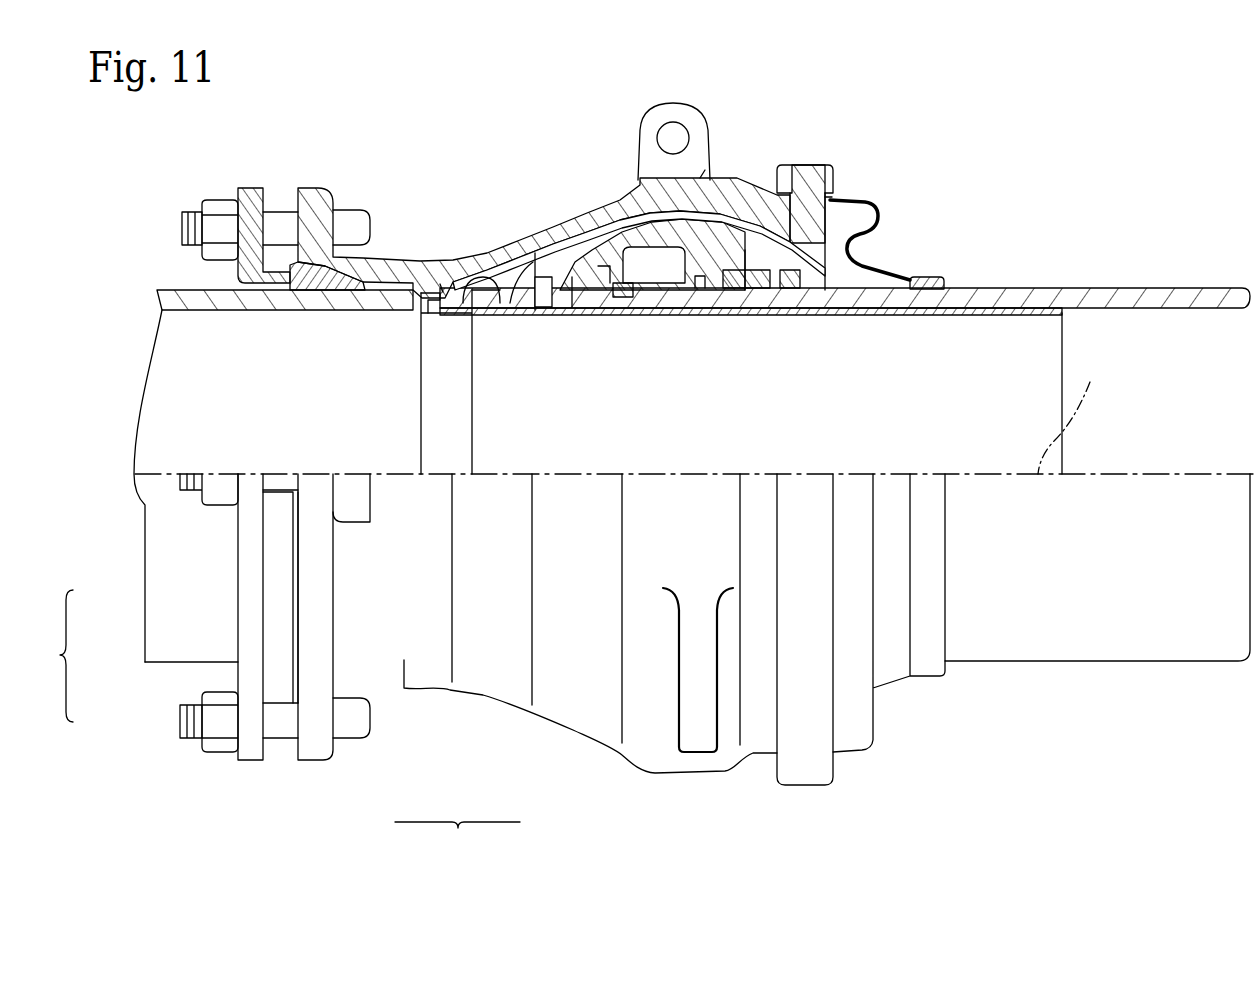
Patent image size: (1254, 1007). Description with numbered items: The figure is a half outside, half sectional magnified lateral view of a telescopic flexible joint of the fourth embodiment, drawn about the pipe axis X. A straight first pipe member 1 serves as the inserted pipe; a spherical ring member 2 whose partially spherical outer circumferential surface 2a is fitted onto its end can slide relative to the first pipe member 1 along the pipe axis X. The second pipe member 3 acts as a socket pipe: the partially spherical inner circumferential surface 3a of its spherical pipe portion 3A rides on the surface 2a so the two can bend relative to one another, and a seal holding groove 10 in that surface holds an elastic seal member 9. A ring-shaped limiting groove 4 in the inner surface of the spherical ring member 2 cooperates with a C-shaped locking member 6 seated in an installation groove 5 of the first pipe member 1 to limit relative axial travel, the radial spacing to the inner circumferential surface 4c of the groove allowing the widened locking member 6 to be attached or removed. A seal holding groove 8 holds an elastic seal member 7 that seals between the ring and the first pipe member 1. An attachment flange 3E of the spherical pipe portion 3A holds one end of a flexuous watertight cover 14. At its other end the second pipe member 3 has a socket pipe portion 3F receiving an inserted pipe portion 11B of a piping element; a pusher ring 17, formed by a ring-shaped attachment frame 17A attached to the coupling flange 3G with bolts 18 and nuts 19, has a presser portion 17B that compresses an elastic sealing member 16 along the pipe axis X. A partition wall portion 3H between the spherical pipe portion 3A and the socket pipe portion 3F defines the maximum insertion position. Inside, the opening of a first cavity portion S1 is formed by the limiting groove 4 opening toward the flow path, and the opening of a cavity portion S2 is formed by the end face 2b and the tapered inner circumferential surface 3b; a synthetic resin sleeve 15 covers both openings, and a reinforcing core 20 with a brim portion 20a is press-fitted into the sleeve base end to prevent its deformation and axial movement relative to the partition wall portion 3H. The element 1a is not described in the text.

The first pipe member 1 is at (1036, 288).
The step portion of shaft 1a is at (933, 313).
The spherical ring member 2 is at (743, 232).
The partially spherical outer circumferential surface 2a is at (580, 235).
The end face of the spherical ring member 2b is at (520, 297).
The second pipe member 3 is at (457, 849).
The spherical pipe portion 3A is at (713, 180).
The attachment flange 3E is at (797, 180).
The socket pipe portion 3F is at (406, 262).
The coupling flange 3G is at (312, 195).
The partition wall portion 3H is at (451, 275).
The partially spherical inner circumferential surface 3a is at (825, 197).
The tapered inner circumferential surface 3b is at (505, 262).
The limiting groove 4 is at (672, 292).
The inner circumferential surface of the limiting groove 4c is at (574, 300).
The installation groove 5 is at (625, 298).
The locking member 6 is at (600, 307).
The elastic seal member 7 is at (790, 320).
The seal holding groove 8 is at (740, 310).
The elastic seal member 9 is at (705, 168).
The seal holding groove 10 is at (638, 178).
The inserted pipe portion 11B is at (282, 312).
The cover 14 is at (862, 207).
The sleeve 15 is at (826, 315).
The elastic sealing member 16 is at (312, 312).
The pusher ring 17 is at (233, 274).
The ring-shaped attachment frame 17A is at (247, 196).
The presser portion 17B is at (255, 312).
The bolt 18 is at (360, 215).
The nut 19 is at (217, 202).
The reinforcing core 20 is at (442, 390).
The brim portion 20a is at (418, 316).
The first cavity portion S1 is at (562, 297).
The cavity portion S2 is at (497, 303).
The pipe axis X is at (1067, 414).